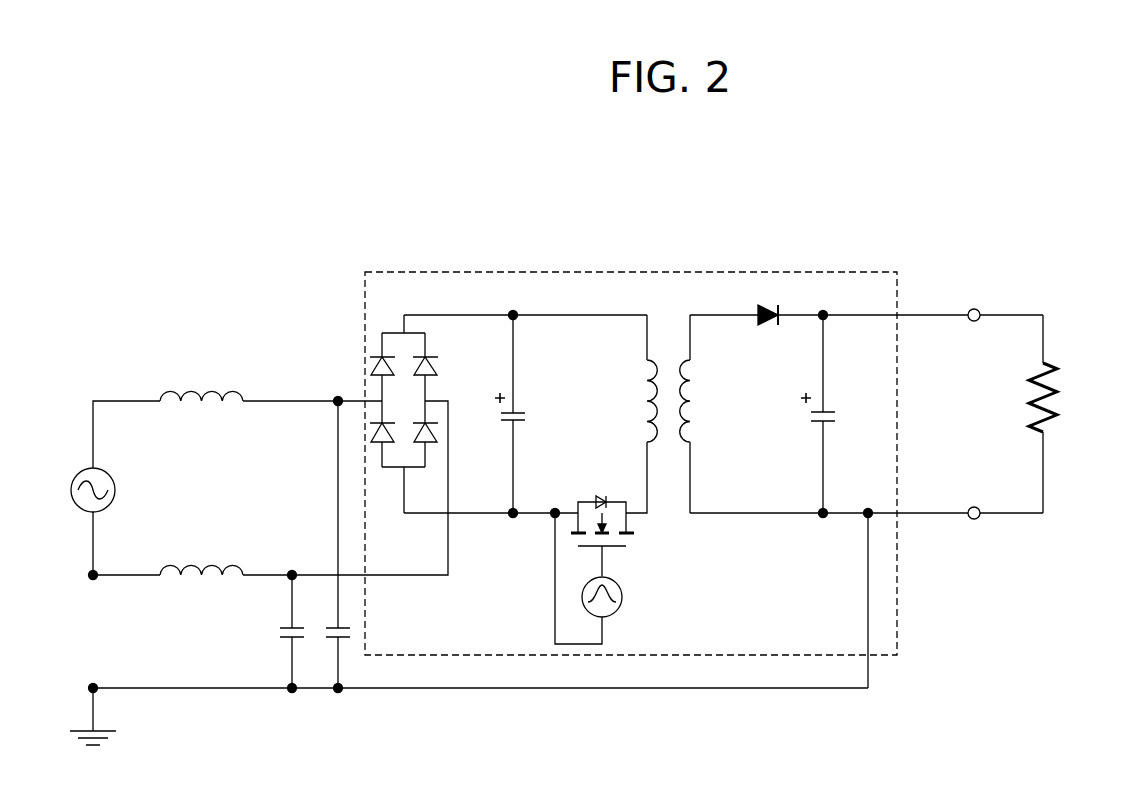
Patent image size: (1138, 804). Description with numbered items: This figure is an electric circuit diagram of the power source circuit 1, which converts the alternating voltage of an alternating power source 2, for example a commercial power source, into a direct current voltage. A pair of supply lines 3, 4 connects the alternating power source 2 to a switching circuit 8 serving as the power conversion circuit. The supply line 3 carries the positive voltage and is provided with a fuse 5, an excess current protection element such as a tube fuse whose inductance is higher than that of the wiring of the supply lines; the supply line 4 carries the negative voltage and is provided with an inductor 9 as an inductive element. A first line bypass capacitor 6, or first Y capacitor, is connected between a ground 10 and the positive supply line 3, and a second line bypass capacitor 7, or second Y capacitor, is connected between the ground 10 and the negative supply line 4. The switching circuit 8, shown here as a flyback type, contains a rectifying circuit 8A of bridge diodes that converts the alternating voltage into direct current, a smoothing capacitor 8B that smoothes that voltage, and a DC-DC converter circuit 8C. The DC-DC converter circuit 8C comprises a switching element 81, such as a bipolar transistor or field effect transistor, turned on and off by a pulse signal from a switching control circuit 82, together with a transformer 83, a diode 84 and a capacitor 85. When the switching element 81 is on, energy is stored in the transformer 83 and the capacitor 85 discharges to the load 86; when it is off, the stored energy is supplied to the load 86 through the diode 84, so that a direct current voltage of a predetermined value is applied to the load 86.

The power source circuit 1 is at (533, 220).
The alternating power source 2 is at (71, 489).
The supply line 3 is at (92, 430).
The supply line 4 is at (130, 580).
The fuse 5 is at (194, 395).
The first line bypass capacitor 6 is at (332, 643).
The second line bypass capacitor 7 is at (282, 640).
The switching circuit 8 is at (879, 270).
The rectifying circuit 8A is at (380, 364).
The smoothing capacitor 8B is at (520, 410).
The DC-DC converter circuit 8C is at (703, 306).
The inductor 9 is at (184, 580).
The ground 10 is at (232, 690).
The switching element 81 is at (632, 538).
The switching control circuit 82 is at (624, 610).
The transformer 83 is at (646, 378).
The diode 84 is at (766, 306).
The capacitor 85 is at (814, 428).
The load 86 is at (1058, 388).